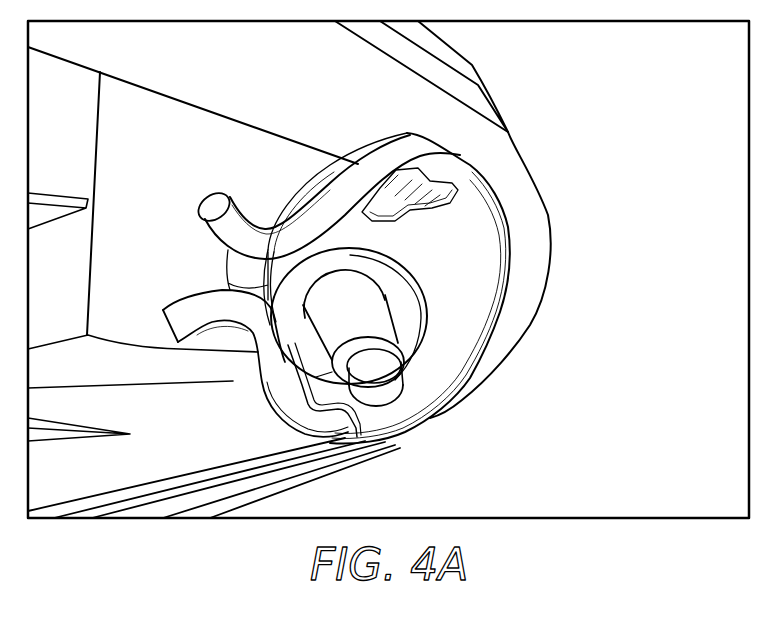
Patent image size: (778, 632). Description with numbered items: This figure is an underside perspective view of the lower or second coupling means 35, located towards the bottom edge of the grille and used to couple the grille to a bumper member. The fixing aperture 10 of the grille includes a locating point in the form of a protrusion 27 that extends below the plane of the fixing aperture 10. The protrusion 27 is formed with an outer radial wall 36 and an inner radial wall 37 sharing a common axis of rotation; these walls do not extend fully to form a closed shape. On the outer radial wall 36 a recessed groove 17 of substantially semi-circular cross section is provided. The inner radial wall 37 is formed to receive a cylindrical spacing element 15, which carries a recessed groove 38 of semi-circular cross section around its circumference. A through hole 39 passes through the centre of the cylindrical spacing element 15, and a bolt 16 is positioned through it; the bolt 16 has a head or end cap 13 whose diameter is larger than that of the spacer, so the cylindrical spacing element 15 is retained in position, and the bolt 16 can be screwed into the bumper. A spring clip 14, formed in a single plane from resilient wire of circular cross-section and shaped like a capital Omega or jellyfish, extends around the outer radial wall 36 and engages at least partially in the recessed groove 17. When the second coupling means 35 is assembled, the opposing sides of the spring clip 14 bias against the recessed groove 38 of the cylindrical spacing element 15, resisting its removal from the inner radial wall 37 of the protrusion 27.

The fixing aperture 10 is at (533, 200).
The head or end cap 13 is at (284, 208).
The spring clip 14 is at (330, 436).
The cylindrical spacing element 15 is at (405, 313).
The bolt 16 is at (380, 393).
The recessed groove 17 is at (482, 205).
The protrusion 27 is at (473, 348).
The second coupling means 35 is at (463, 436).
The outer radial wall 36 is at (512, 300).
The inner radial wall 37 is at (430, 297).
The recessed groove 38 is at (263, 283).
The through hole 39 is at (293, 358).